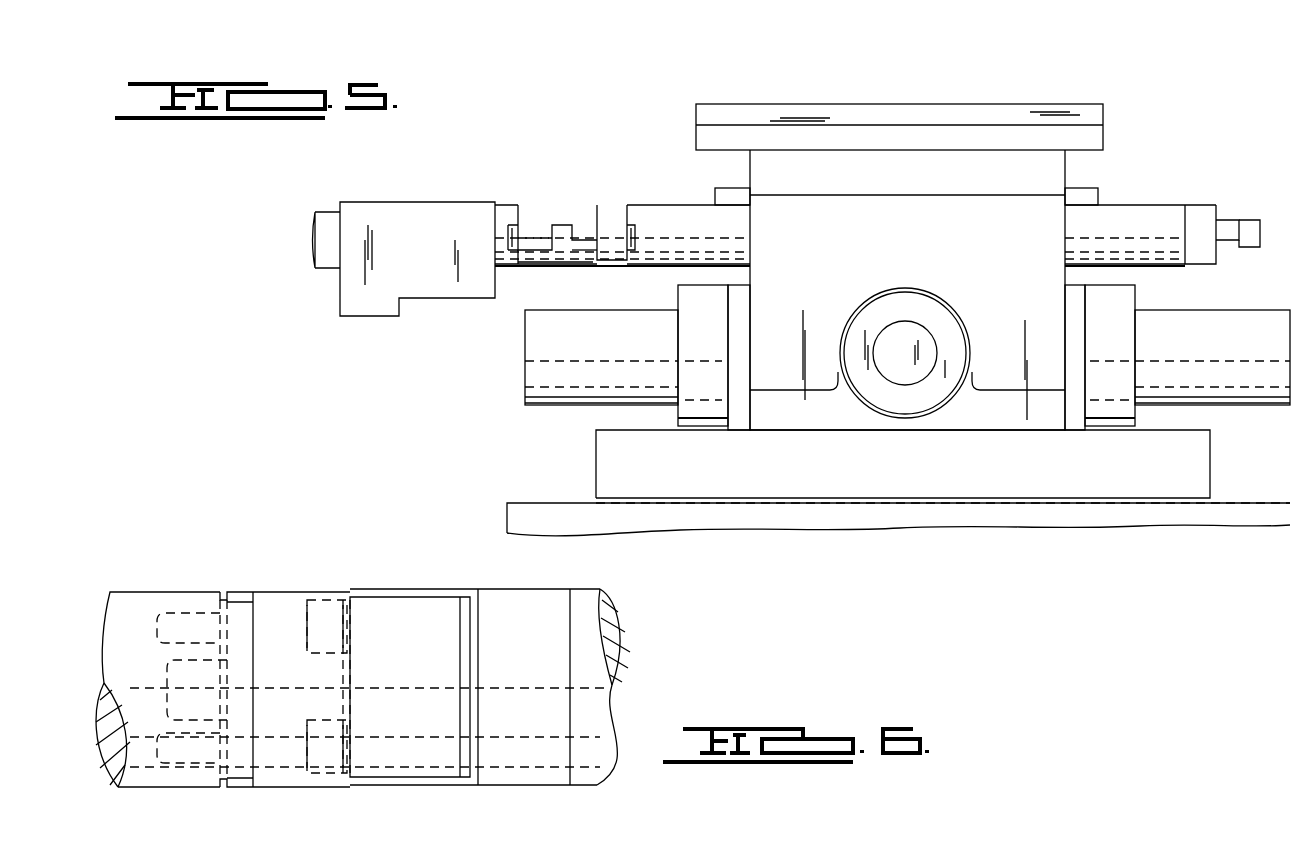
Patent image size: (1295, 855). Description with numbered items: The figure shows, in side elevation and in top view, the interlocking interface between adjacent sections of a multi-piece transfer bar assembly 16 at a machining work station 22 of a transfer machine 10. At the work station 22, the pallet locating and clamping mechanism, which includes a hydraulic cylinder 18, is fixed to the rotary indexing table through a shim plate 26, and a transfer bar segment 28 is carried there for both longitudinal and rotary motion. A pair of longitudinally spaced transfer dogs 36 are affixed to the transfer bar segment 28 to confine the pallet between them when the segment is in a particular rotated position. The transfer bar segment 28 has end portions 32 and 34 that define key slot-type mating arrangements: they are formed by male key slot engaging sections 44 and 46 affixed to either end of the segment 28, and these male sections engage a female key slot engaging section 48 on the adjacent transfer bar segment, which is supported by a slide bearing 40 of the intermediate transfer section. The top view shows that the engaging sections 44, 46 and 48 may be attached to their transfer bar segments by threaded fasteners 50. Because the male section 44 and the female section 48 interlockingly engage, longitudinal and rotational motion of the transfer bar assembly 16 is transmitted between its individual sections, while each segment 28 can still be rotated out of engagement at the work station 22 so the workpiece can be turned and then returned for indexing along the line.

In FIG. 5, the positioning apparatus 10 is at (1176, 104).
In FIG. 5, the transfer bar assembly 16 is at (1160, 198).
In FIG. 6, the transfer bar assembly 16 is at (450, 590).
In FIG. 5, the hydraulic cylinder 18 is at (905, 322).
In FIG. 5, the work station 22 is at (946, 104).
In FIG. 5, the shim plate 26 is at (548, 500).
In FIG. 5, the transfer bar segment 28 is at (665, 272).
In FIG. 5, the end portion 32 is at (608, 205).
In FIG. 5, the end portion 34 is at (1203, 202).
In FIG. 5, the transfer dog 36 is at (725, 188).
In FIG. 5, the slide bearing 40 is at (434, 205).
In FIG. 5, the male key slot engaging section 44 is at (604, 268).
In FIG. 6, the male key slot engaging section 44 is at (392, 597).
In FIG. 5, the male key slot engaging section 46 is at (1250, 220).
In FIG. 5, the female key slot engaging section 48 is at (550, 206).
In FIG. 6, the female key slot engaging section 48 is at (280, 592).
In FIG. 6, the threaded fastener 50 is at (184, 612).